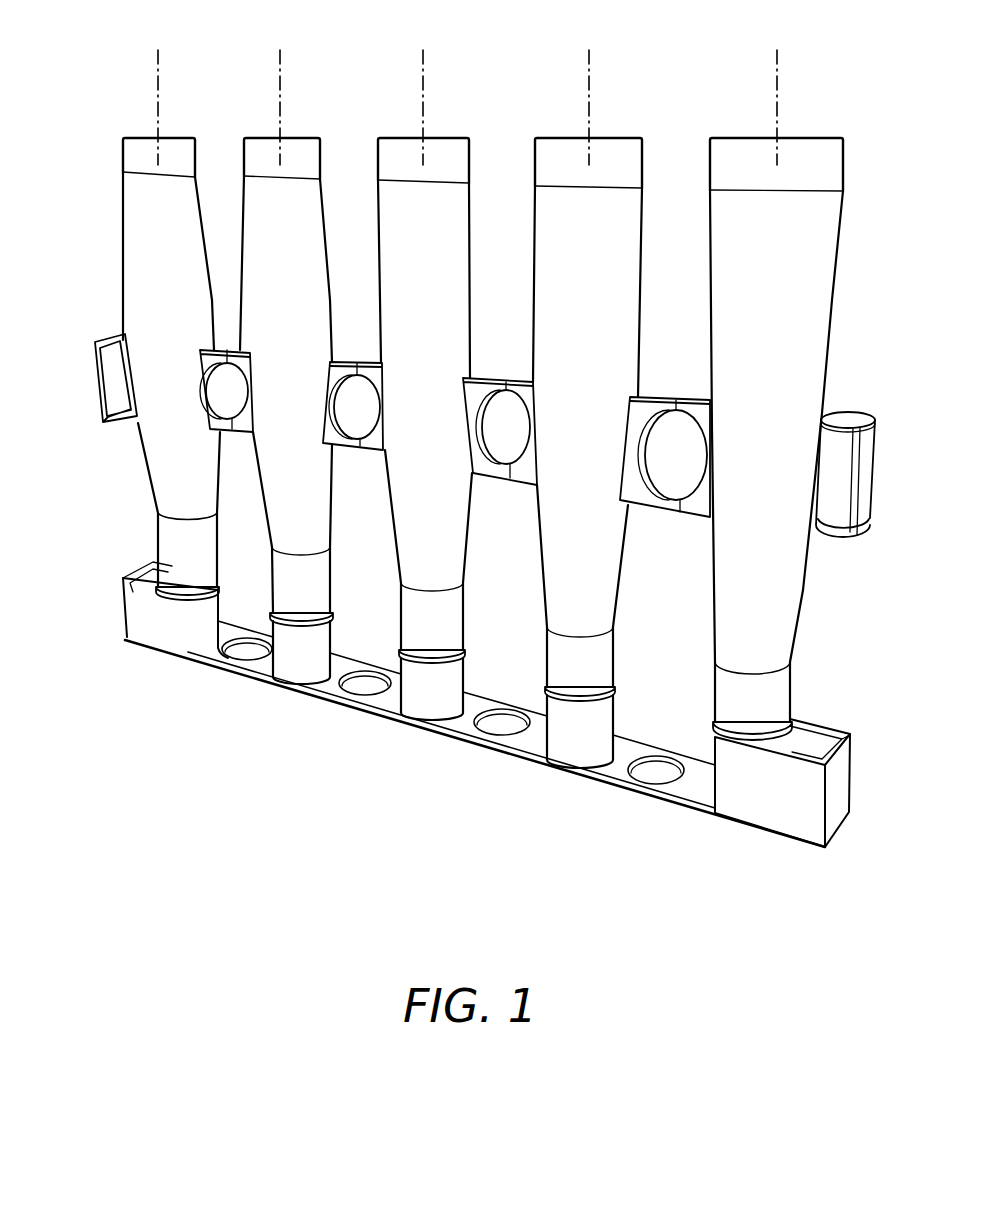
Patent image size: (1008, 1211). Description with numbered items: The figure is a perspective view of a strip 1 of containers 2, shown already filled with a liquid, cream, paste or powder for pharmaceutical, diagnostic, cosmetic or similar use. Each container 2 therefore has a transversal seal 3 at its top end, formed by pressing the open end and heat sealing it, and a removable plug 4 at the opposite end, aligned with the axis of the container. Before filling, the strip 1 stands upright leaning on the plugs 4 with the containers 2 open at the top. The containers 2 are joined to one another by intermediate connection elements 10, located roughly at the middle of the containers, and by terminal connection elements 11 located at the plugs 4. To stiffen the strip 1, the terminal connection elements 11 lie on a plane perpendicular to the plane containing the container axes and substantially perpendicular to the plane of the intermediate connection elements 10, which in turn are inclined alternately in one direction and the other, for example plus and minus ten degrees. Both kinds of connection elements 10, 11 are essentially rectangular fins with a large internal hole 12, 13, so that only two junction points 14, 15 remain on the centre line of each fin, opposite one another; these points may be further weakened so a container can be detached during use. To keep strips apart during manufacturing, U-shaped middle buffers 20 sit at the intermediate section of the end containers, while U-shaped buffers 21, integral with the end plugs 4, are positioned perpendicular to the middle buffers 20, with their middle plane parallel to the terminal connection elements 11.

The strip of containers 1 is at (158, 682).
The container 2 is at (622, 332).
The transversal seal 3 is at (543, 163).
The removable plug 4 is at (302, 665).
The intermediate connection element 10 is at (373, 453).
The terminal connection element 11 is at (703, 800).
The internal hole 12 is at (351, 387).
The internal hole 13 is at (365, 692).
The junction point 14 is at (498, 378).
The junction point 15 is at (518, 709).
The middle buffer element 20 is at (113, 365).
The buffer element 21 is at (143, 613).